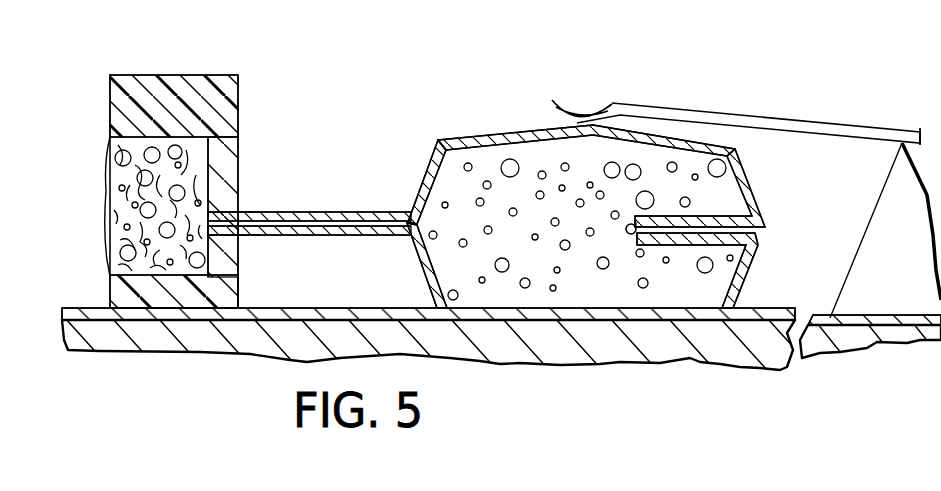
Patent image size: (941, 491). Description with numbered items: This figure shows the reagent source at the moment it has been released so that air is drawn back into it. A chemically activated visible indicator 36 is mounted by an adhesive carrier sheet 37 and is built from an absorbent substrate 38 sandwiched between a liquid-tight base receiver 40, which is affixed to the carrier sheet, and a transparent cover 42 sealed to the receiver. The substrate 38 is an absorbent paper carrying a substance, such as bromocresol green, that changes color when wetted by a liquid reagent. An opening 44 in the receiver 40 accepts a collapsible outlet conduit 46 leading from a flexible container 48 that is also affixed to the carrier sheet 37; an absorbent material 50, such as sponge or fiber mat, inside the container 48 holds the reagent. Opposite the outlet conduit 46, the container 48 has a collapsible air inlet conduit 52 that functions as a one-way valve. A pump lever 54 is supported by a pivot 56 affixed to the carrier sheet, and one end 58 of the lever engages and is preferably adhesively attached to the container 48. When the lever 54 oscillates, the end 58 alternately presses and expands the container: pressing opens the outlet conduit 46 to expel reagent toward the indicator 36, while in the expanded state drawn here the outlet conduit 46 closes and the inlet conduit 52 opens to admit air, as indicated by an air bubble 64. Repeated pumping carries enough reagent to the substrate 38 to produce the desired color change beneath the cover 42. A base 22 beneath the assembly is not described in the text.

The base substrate 22 is at (623, 348).
The chemically activated visible indicator 36 is at (169, 164).
The adhesive carrier sheet 37 is at (745, 306).
The absorbent substrate 38 is at (125, 230).
The liquid-tight base receiver 40 is at (227, 282).
The transparent cover 42 is at (196, 103).
The opening 44 is at (238, 210).
The collapsible outlet conduit 46 is at (309, 190).
The flexible container 48 is at (567, 195).
The absorbent material 50 is at (450, 192).
The collapsible air inlet conduit 52 is at (747, 231).
The pump lever 54 is at (700, 118).
The pivot 56 is at (885, 195).
The end of pump lever 58 is at (596, 112).
The air bubble 64 is at (632, 230).